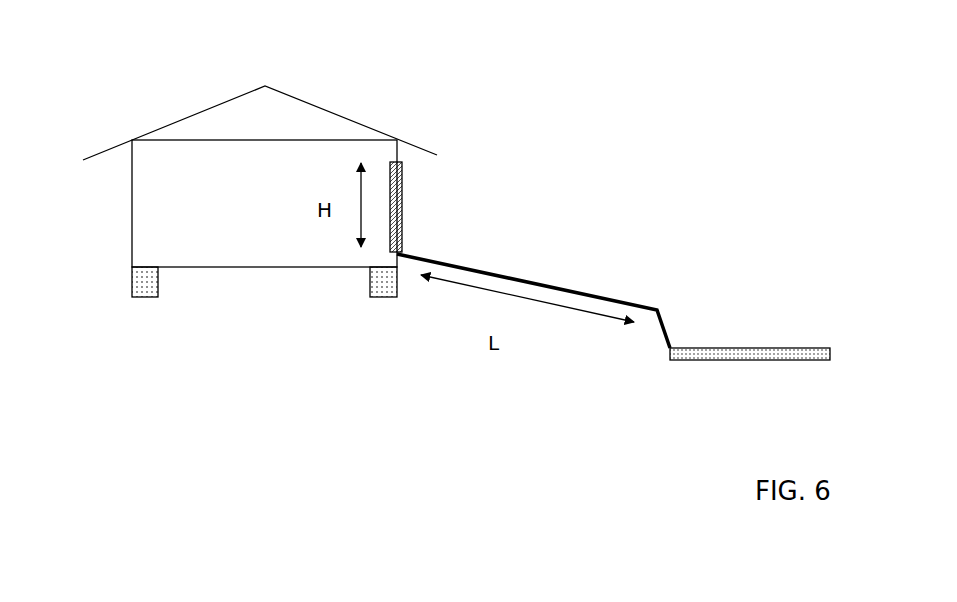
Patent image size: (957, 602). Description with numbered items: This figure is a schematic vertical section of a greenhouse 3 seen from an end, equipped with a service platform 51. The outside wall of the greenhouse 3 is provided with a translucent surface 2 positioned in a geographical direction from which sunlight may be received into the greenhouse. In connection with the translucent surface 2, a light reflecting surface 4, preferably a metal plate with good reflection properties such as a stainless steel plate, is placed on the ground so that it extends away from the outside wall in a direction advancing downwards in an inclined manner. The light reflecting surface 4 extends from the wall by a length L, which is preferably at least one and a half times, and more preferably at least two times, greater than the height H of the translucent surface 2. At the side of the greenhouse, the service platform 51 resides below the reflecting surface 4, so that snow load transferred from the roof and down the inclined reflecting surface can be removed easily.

The greenhouse 3 is at (190, 96).
The translucent surface 2 is at (402, 210).
The light reflecting surface 4 is at (478, 268).
The service platform 51 is at (752, 348).